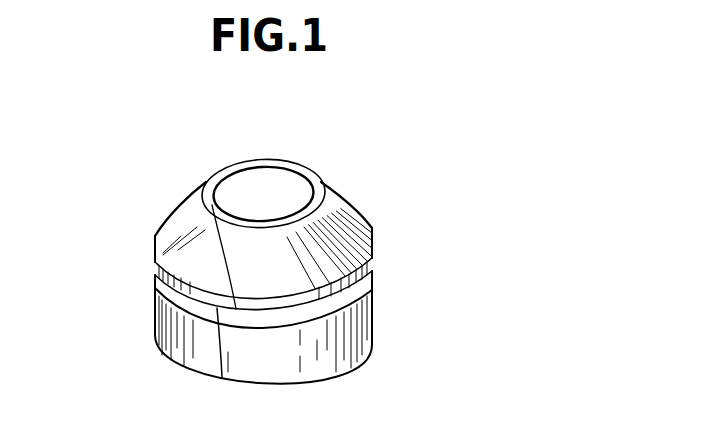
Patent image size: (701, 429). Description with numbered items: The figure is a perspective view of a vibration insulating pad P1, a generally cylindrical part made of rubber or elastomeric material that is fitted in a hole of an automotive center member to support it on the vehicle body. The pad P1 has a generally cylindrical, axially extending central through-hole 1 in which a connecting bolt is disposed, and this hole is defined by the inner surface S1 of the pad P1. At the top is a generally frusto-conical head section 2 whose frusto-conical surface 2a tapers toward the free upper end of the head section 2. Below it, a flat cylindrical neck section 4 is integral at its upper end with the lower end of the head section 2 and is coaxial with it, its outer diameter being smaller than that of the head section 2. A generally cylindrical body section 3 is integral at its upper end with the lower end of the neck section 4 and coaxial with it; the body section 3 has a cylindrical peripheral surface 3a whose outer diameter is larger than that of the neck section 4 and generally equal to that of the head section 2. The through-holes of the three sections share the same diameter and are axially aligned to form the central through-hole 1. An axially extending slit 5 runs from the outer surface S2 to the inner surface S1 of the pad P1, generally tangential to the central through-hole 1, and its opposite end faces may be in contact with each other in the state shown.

The vibration insulating pad P1 is at (365, 188).
The axially extending central through-hole 1 is at (218, 190).
The inner surface S1 is at (296, 188).
The head section 2 is at (372, 229).
The frusto-conical surface 2a is at (172, 237).
The neck section 4 is at (372, 290).
The body section 3 is at (367, 326).
The cylindrical peripheral surface 3a is at (175, 328).
The outer surface S2 is at (320, 357).
The axially extending slit 5 is at (222, 352).